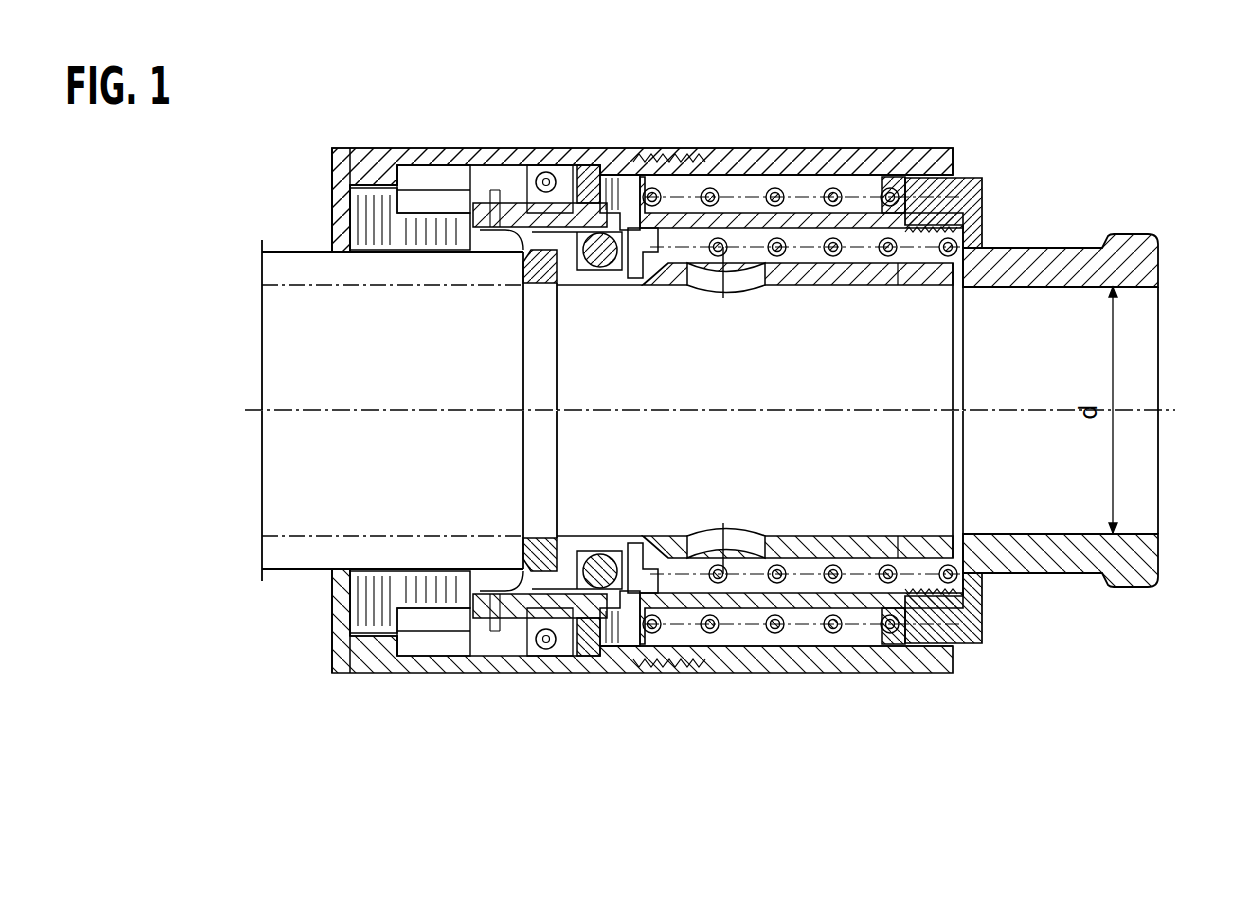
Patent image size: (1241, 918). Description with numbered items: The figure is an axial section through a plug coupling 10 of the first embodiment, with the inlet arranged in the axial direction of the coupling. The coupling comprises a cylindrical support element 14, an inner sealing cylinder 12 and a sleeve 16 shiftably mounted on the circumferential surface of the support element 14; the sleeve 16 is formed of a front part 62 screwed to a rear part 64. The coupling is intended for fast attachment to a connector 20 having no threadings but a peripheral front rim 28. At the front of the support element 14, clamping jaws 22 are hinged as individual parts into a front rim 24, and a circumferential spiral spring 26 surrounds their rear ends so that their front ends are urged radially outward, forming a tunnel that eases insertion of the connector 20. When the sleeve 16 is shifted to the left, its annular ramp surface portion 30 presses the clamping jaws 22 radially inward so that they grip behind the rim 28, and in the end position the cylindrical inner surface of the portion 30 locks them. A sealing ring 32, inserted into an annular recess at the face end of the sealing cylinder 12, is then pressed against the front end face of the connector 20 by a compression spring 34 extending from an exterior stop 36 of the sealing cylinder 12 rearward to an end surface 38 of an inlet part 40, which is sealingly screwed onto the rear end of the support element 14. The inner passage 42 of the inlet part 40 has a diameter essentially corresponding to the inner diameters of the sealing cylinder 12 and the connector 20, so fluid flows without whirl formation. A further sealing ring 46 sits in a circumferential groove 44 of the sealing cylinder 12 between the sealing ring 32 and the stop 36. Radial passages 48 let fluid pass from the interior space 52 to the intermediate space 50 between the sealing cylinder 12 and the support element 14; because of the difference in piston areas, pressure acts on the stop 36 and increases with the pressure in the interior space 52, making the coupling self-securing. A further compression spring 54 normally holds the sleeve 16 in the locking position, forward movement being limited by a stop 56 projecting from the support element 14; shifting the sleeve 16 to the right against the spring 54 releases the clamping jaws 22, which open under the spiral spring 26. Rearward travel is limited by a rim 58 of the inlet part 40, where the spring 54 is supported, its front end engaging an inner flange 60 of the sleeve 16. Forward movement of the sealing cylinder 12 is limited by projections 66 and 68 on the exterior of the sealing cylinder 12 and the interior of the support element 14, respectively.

The plug coupling 10 is at (998, 150).
The inner sealing cylinder 12 is at (898, 268).
The support element 14 is at (740, 215).
The sleeve 16 is at (822, 150).
The connector 20 is at (283, 569).
The clamping jaws 22 is at (345, 220).
The front rim 24 is at (467, 168).
The spiral spring 26 is at (538, 172).
The peripheral front rim 28 is at (540, 650).
The annular ramp surface portion 30 is at (352, 150).
The sealing ring 32 is at (540, 283).
The compression spring 34 is at (720, 256).
The exterior stop 36 is at (668, 640).
The end surface 38 is at (920, 622).
The inlet part 40 is at (1060, 265).
The inner passage 42 is at (1125, 491).
The circumferential groove 44 is at (605, 560).
The further sealing ring 46 is at (592, 625).
The radial passages 48 is at (753, 293).
The intermediate space 50 is at (768, 600).
The interior space 52 is at (866, 445).
The further compression spring 54 is at (884, 180).
The stop 56 is at (588, 200).
The rim 58 is at (982, 190).
The inner flange 60 is at (612, 178).
The front part 62 is at (380, 160).
The rear part 64 is at (790, 150).
The projection 66 is at (640, 258).
The projection 68 is at (596, 200).